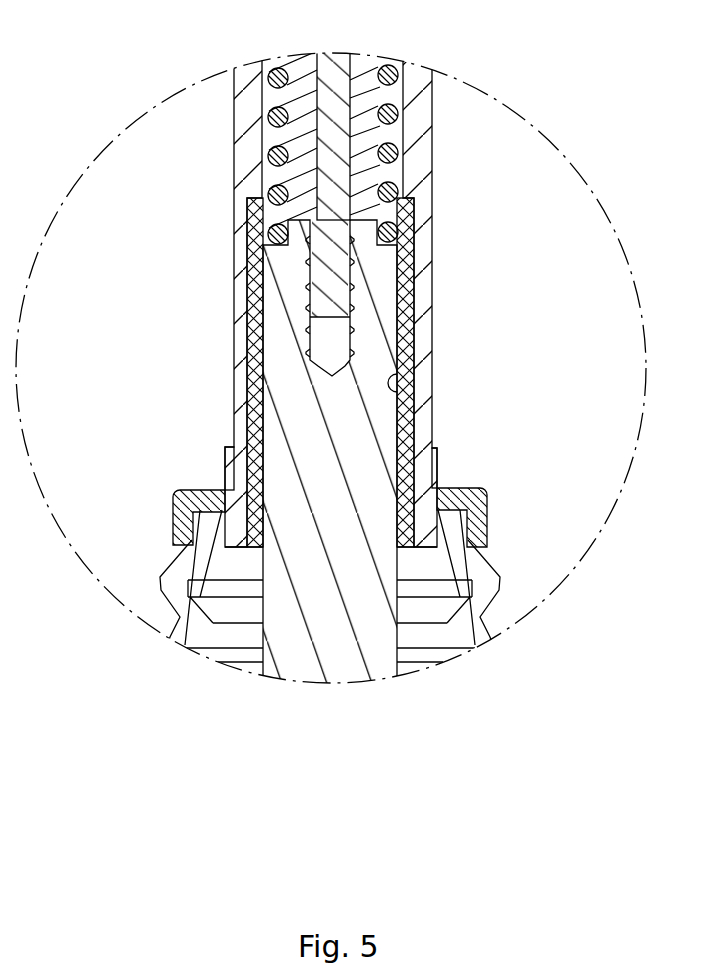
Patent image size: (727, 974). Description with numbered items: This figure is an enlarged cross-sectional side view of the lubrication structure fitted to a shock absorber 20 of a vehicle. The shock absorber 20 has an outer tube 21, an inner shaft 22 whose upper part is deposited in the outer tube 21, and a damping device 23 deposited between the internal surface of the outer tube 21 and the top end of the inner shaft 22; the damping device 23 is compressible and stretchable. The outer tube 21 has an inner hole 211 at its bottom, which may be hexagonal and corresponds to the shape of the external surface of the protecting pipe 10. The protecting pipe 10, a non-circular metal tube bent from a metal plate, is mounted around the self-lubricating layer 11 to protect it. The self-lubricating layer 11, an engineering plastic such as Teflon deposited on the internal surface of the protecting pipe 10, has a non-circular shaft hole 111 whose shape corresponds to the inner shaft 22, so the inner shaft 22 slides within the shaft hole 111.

The protecting pipe 10 is at (245, 230).
The self-lubricating layer 11 is at (397, 357).
The shaft hole 111 is at (400, 390).
The shock absorber 20 is at (474, 262).
The outer tube 21 is at (243, 107).
The inner hole 211 is at (437, 242).
The inner shaft 22 is at (371, 438).
The damping device 23 is at (397, 70).